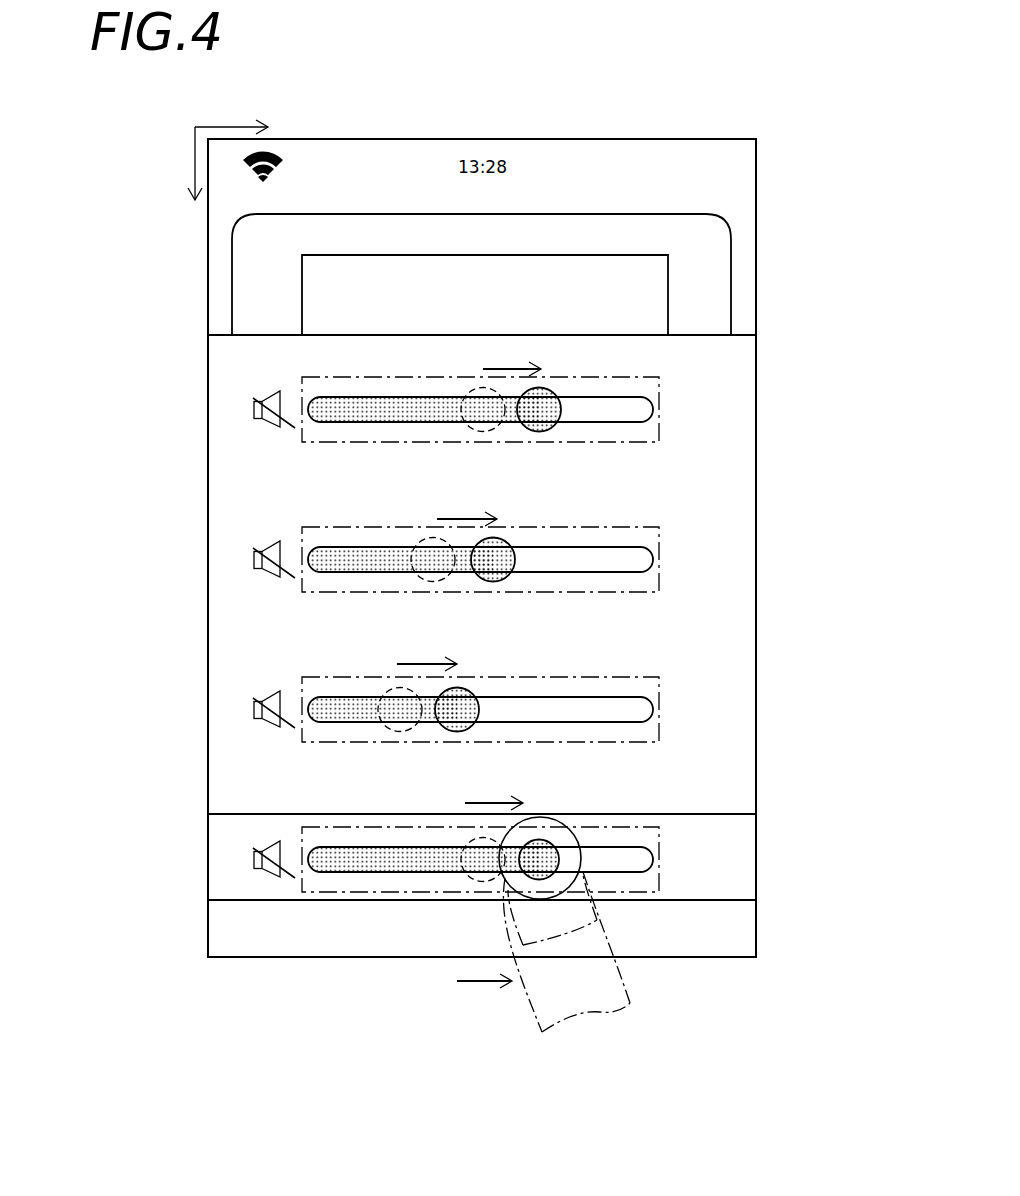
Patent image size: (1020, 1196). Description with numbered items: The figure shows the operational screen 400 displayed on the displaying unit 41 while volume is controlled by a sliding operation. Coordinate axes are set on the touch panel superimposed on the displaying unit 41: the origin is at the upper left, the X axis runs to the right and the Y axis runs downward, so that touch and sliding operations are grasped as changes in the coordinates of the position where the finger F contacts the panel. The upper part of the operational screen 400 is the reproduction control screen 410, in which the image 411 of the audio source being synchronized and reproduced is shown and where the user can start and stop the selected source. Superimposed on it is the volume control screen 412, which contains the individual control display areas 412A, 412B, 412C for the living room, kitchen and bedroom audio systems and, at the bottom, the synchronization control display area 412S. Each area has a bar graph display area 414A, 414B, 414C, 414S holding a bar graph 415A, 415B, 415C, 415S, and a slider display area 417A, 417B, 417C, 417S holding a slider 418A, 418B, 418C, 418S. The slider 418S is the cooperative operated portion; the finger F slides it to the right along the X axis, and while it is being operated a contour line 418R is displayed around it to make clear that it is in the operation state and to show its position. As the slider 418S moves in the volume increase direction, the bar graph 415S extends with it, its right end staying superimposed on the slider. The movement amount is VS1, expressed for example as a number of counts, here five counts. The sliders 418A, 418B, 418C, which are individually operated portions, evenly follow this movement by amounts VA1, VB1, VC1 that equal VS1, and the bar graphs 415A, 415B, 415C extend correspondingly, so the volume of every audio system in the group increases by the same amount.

The operational screen 400 is at (546, 529).
The displaying unit 41 is at (757, 140).
The reproduction control screen 410 is at (731, 249).
The image of the audio source 411 is at (668, 312).
The volume control screen 412 is at (208, 633).
The individual control display area 412A is at (243, 390).
The individual control display area 412B is at (243, 540).
The individual control display area 412C is at (243, 690).
The synchronization control display area 412S is at (243, 840).
The bar graph display area 414A is at (653, 412).
The bar graph display area 414B is at (653, 562).
The bar graph display area 414C is at (653, 712).
The bar graph display area 414S is at (653, 862).
The bar graph 415A is at (308, 420).
The bar graph 415B is at (308, 570).
The bar graph 415C is at (308, 720).
The bar graph 415S is at (308, 870).
The slider display area 417A is at (659, 390).
The slider display area 417B is at (659, 540).
The slider display area 417C is at (659, 690).
The slider display area 417S is at (659, 840).
The slider 418A is at (545, 398).
The slider 418B is at (499, 548).
The slider 418C is at (446, 726).
The slider 418S is at (538, 840).
The contour line 418R is at (497, 878).
The finger F is at (535, 1005).
The movement amount VA1 is at (512, 355).
The movement amount VB1 is at (467, 505).
The movement amount VC1 is at (427, 650).
The movement amount VS1 is at (494, 788).
The X axis X is at (236, 111).
The Y axis Y is at (181, 174).